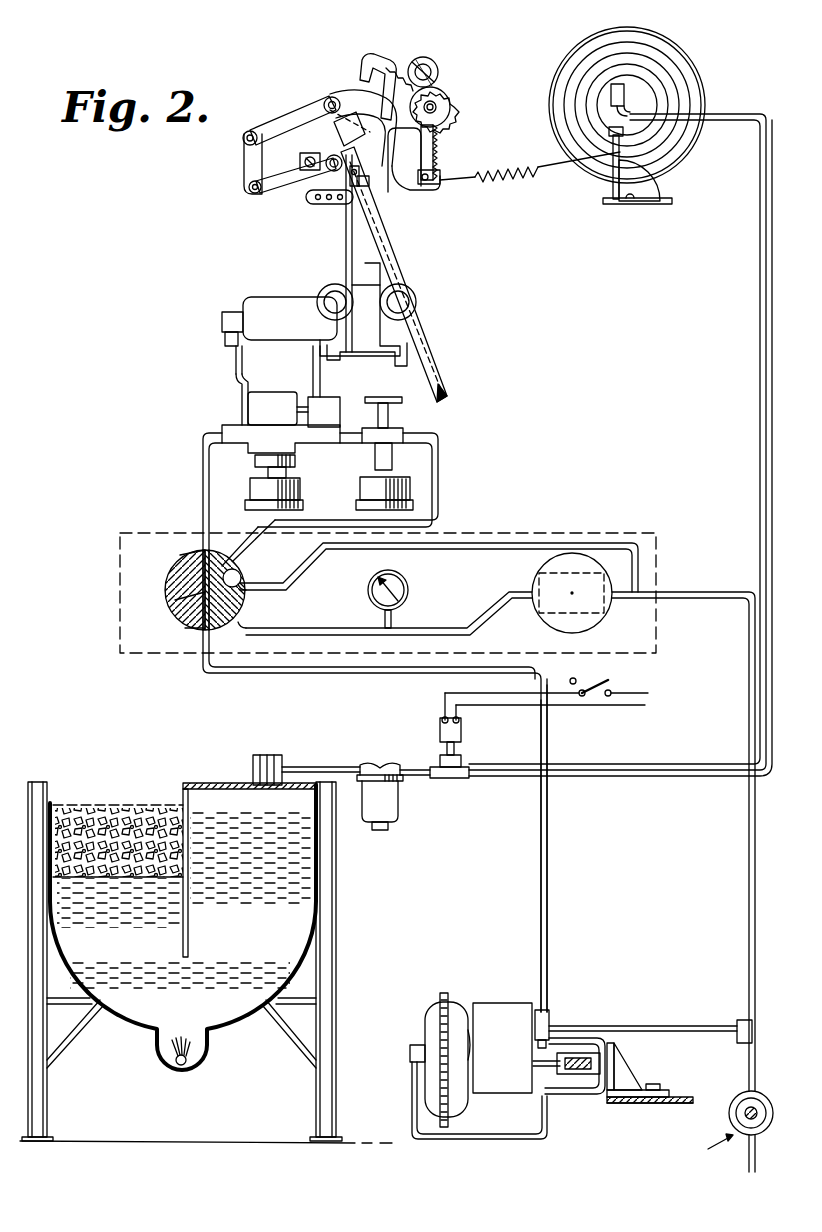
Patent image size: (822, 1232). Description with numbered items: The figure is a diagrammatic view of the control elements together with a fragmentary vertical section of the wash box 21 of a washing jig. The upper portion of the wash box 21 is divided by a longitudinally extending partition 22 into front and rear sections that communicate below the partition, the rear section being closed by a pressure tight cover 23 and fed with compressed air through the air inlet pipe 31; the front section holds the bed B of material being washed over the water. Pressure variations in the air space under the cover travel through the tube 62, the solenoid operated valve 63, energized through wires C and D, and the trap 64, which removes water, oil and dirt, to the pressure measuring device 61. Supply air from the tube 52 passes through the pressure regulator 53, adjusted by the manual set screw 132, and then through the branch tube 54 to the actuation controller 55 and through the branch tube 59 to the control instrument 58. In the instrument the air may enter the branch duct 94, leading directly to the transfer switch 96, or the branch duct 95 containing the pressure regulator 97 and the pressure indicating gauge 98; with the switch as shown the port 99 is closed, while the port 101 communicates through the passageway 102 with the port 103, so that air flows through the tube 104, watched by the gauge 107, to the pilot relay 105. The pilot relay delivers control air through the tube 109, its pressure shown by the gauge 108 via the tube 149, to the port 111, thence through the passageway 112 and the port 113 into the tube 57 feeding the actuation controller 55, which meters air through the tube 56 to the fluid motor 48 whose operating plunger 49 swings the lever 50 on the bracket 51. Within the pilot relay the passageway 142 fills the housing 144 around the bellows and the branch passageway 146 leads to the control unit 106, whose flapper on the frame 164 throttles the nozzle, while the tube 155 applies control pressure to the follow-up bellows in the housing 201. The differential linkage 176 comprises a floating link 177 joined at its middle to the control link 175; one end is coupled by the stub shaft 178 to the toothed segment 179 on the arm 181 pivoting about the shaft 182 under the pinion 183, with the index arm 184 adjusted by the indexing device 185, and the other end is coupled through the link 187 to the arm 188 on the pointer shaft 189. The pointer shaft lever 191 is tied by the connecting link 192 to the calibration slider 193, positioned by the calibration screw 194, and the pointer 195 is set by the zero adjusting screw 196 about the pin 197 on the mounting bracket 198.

The wash box 21 is at (318, 950).
The partition 22 is at (182, 938).
The pressure tight cover 23 is at (226, 784).
The air inlet pipe 31 is at (282, 752).
The fluid motor 48 is at (422, 1022).
The operating plunger 49 is at (556, 1096).
The lever 50 is at (588, 1076).
The bracket 51 is at (632, 1075).
The tube 52 is at (748, 1160).
The pressure regulator 53 is at (737, 1094).
The branch tube 54 is at (640, 1025).
The actuation controller 55 is at (551, 1016).
The tube 56 is at (480, 1142).
The tube 57 is at (548, 897).
The control instrument 58 is at (264, 292).
The branch tube 59 is at (748, 885).
The pressure measuring device 61 is at (645, 38).
The tube 62 is at (764, 348).
The solenoid operated valve 63 is at (453, 779).
The trap 64 is at (399, 800).
The branch duct 94 is at (502, 540).
The branch duct 95 is at (496, 606).
The transfer switch 96 is at (158, 573).
The pressure regulator 97 is at (604, 626).
The pressure indicating gauge 98 is at (402, 578).
The port 99 is at (243, 608).
The port 101 is at (243, 586).
The passageway 102 is at (240, 574).
The port 103 is at (244, 553).
The tube 104 is at (340, 518).
The pilot relay 105 is at (224, 422).
The control unit 106 is at (300, 345).
The pressure indicating gauge 107 is at (411, 489).
The pressure indicating gauge 108 is at (300, 490).
The tube 109 is at (203, 462).
The port 111 is at (190, 553).
The passageway 112 is at (180, 603).
The port 113 is at (195, 628).
The manual set screw 132 is at (746, 1110).
The passageway 142 is at (320, 410).
The housing 144 is at (262, 392).
The branch passageway 146 is at (321, 377).
The tube 149 is at (295, 464).
The tube 155 is at (236, 380).
The frame 164 is at (386, 357).
The control link 175 is at (345, 245).
The differential linkage 176 is at (243, 157).
The floating link 177 is at (418, 196).
The stub shaft 178 is at (440, 173).
The toothed segment 179 is at (396, 64).
The arm 181 is at (436, 141).
The shaft 182 is at (326, 170).
The pinion 183 is at (448, 95).
The index arm 184 is at (440, 376).
The indexing device 185 is at (315, 152).
The link 187 is at (246, 172).
The arm 188 is at (292, 116).
The pointer shaft 189 is at (323, 100).
The pointer shaft lever 191 is at (362, 92).
The connecting link 192 is at (508, 180).
The calibration slider 193 is at (662, 188).
The calibration screw 194 is at (620, 205).
The pointer 195 is at (392, 229).
The zero adjusting screw 196 is at (350, 187).
The pin 197 is at (378, 160).
The mounting bracket 198 is at (360, 130).
The housing 201 is at (292, 296).
The gravel bed B is at (110, 805).
The wire C is at (592, 708).
The wire D is at (622, 690).